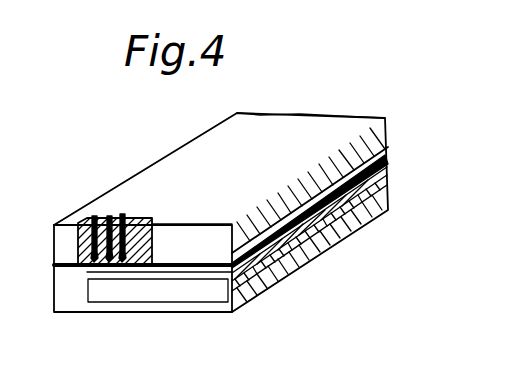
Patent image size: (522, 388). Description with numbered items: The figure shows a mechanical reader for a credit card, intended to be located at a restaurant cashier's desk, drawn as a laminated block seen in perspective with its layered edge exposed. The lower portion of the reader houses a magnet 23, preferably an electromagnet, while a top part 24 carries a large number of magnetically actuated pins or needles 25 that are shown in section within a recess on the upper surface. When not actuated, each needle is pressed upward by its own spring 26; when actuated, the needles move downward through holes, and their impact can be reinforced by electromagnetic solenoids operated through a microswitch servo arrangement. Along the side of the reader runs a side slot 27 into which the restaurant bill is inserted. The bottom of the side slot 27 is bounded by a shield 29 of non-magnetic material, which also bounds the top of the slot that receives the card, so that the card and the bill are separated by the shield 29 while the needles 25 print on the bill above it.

The magnet 23 is at (156, 294).
The top part 24 is at (215, 253).
The magnetically actuated pins or needles 25 is at (128, 216).
The spring 26 is at (128, 258).
The side slot 27 is at (390, 173).
The shield 29 is at (245, 278).